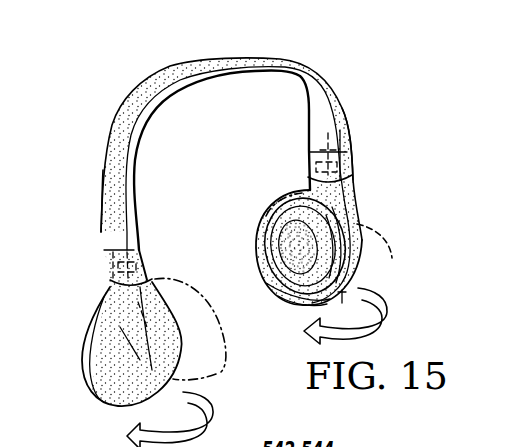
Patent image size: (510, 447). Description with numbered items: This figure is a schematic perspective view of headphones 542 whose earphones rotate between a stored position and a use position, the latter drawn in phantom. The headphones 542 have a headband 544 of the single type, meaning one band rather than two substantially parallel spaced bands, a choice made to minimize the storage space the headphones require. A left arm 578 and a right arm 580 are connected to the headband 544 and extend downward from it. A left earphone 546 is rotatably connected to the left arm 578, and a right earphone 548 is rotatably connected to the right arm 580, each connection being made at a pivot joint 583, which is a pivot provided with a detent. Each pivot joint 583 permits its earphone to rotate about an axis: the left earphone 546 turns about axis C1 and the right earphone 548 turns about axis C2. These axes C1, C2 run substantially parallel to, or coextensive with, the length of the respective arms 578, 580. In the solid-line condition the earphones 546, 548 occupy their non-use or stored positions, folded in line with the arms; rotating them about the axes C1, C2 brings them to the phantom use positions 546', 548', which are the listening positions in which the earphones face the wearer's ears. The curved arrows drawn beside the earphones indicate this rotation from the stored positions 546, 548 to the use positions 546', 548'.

The headphones 542 is at (327, 78).
The headband 544 is at (207, 58).
The left arm 578 is at (100, 212).
The right arm 580 is at (348, 120).
The axis C1 is at (103, 250).
The axis C2 is at (347, 152).
The pivot joint 583 is at (107, 262).
The left earphone 546 is at (118, 349).
The use position of left earphone 546' is at (226, 342).
The right earphone 548 is at (297, 232).
The use position of right earphone 548' is at (340, 241).